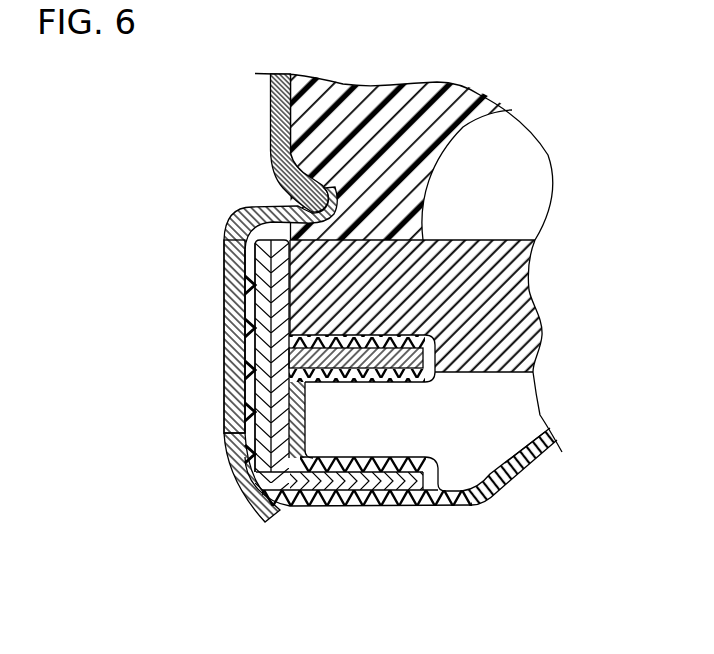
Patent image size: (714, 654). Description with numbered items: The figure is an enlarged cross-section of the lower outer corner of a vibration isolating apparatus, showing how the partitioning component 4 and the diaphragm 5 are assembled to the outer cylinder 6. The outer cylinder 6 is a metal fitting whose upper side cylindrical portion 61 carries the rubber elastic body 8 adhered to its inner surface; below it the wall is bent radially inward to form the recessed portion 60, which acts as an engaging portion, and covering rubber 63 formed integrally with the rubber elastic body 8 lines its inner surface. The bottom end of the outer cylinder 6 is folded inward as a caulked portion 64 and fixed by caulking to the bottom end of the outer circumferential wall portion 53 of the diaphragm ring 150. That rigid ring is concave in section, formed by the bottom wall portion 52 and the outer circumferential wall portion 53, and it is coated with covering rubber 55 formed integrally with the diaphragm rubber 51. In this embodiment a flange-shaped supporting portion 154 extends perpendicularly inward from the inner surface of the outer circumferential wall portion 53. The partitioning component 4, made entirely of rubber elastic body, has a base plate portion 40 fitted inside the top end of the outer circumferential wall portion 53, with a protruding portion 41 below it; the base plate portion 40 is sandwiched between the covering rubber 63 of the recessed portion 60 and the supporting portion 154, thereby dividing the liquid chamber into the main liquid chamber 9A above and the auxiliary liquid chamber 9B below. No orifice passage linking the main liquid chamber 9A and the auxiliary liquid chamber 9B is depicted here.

The partitioning component 4 is at (513, 240).
The diaphragm 5 is at (530, 596).
The outer cylinder 6 is at (224, 389).
The rubber elastic body 8 is at (317, 143).
The main liquid chamber 9A is at (509, 193).
The auxiliary liquid chamber 9B is at (490, 441).
The base plate portion 40 is at (378, 243).
The protruding portion 41 is at (522, 448).
The diaphragm rubber 51 is at (501, 493).
The bottom wall portion 52 is at (345, 488).
The outer circumferential wall portion 53 is at (278, 345).
The covering rubber 55 is at (273, 456).
The recessed portion 60 is at (313, 204).
The upper side cylindrical portion 61 is at (281, 96).
The covering rubber 63 is at (250, 265).
The caulked portion 64 is at (245, 495).
The diaphragm ring 150 is at (389, 506).
The supporting portion 154 is at (405, 363).